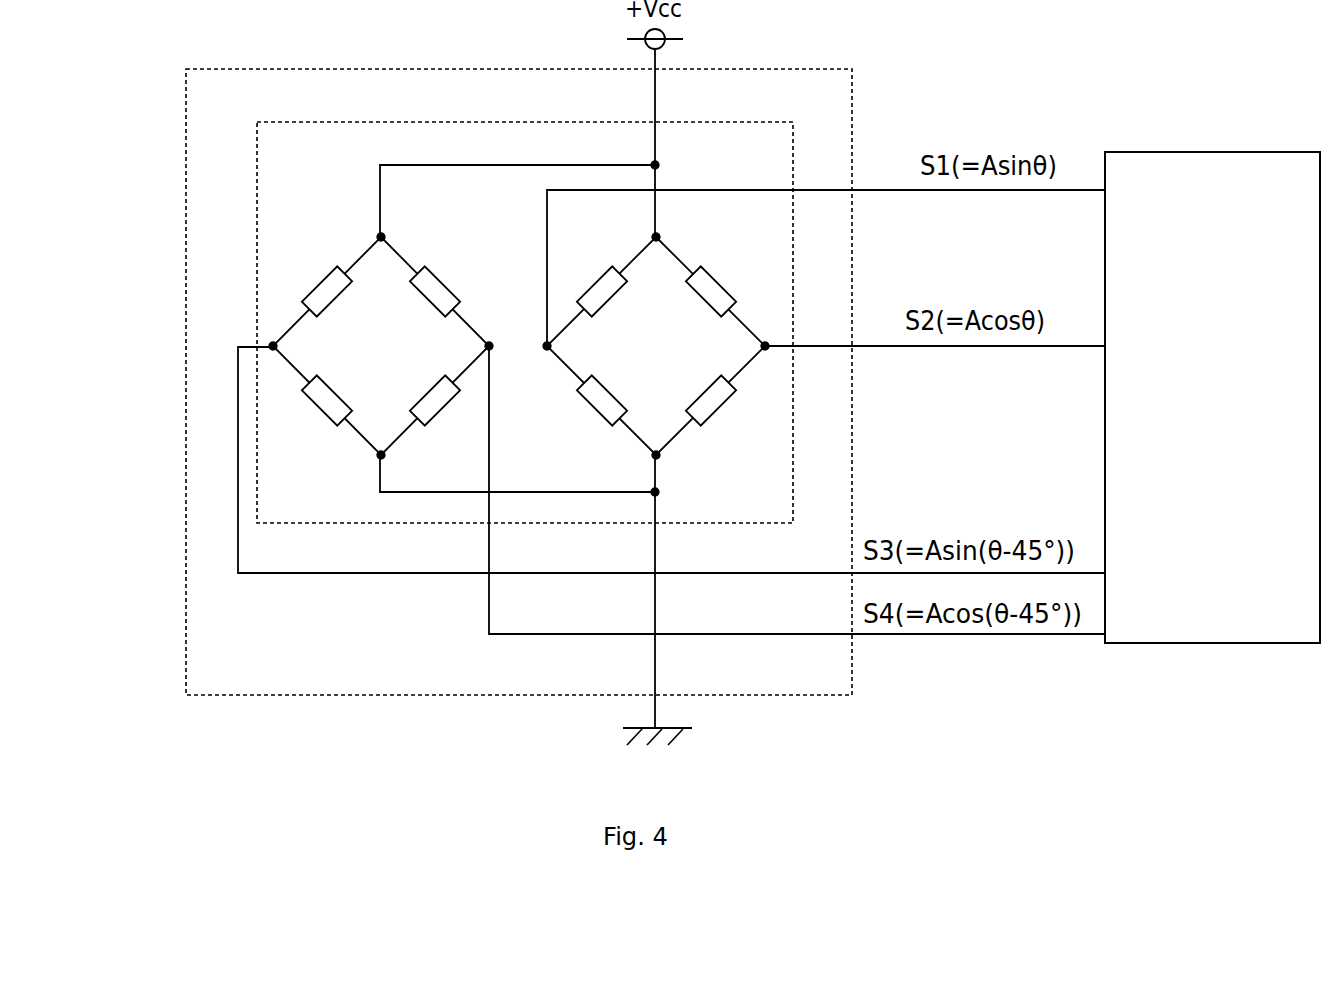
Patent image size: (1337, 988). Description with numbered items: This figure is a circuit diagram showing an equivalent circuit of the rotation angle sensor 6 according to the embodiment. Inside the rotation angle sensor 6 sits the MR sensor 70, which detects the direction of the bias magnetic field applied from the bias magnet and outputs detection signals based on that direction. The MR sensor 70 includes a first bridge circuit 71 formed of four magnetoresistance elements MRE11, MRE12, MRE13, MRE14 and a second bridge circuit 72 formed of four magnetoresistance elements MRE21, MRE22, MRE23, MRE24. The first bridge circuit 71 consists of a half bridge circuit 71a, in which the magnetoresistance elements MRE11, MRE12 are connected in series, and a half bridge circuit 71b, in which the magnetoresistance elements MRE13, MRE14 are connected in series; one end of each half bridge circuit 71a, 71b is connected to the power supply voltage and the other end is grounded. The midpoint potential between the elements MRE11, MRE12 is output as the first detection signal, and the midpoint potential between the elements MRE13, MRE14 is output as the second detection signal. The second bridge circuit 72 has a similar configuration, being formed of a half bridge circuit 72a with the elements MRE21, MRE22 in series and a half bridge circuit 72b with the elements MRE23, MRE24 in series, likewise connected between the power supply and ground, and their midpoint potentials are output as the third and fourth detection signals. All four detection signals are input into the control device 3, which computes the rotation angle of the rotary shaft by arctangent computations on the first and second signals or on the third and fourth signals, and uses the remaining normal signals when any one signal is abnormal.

The control device 3 is at (1212, 152).
The rotation angle sensor 6 is at (780, 69).
The MR sensor 70 is at (762, 122).
The first bridge circuit 71 is at (713, 325).
The half bridge circuit 71a is at (596, 346).
The half bridge circuit 71b is at (729, 351).
The second bridge circuit 72 is at (438, 325).
The half bridge circuit 72a is at (319, 348).
The half bridge circuit 72b is at (443, 349).
The magnetoresistance element MRE11 is at (590, 282).
The magnetoresistance element MRE12 is at (592, 412).
The magnetoresistance element MRE13 is at (730, 292).
The magnetoresistance element MRE14 is at (720, 412).
The magnetoresistance element MRE21 is at (318, 258).
The magnetoresistance element MRE22 is at (318, 412).
The magnetoresistance element MRE23 is at (452, 286).
The magnetoresistance element MRE24 is at (446, 412).